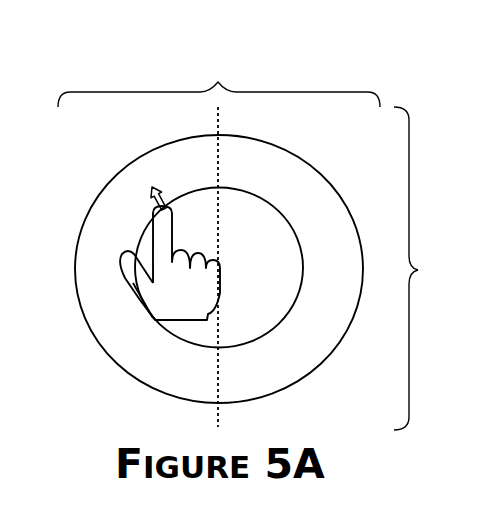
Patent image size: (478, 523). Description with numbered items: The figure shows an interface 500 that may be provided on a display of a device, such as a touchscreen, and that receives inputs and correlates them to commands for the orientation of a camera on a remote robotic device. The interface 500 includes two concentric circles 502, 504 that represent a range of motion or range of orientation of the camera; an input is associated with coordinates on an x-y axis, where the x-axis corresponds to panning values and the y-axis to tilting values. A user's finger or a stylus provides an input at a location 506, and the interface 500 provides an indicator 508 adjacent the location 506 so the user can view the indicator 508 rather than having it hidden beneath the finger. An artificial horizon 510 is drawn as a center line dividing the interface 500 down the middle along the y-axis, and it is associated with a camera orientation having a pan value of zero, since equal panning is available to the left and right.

The interface 500 is at (97, 72).
The concentric circle 502 is at (297, 155).
The concentric circle 504 is at (274, 206).
The location 506 is at (166, 210).
The indicator 508 is at (145, 196).
The artificial horizon 510 is at (218, 415).